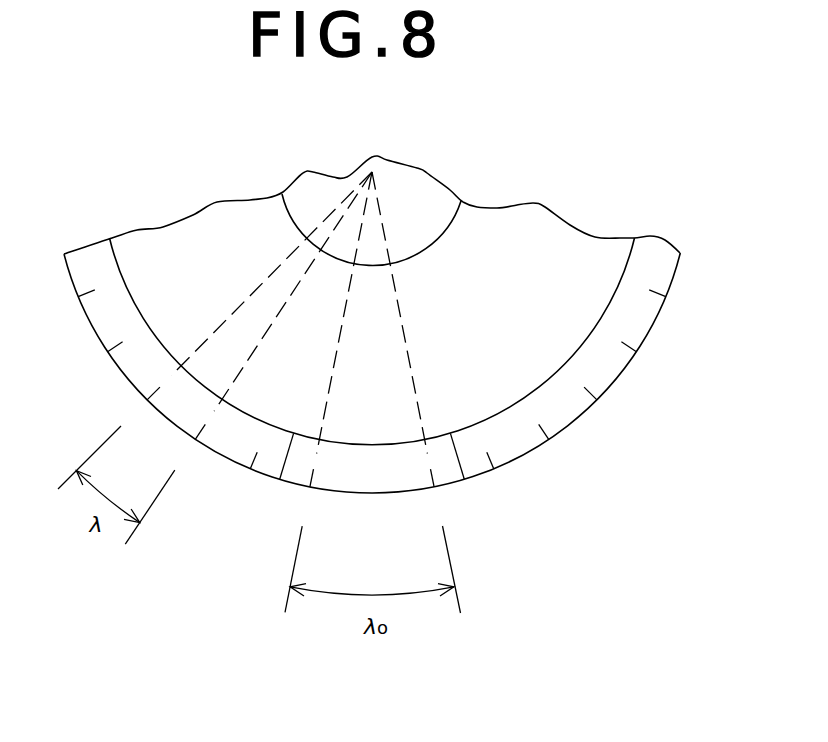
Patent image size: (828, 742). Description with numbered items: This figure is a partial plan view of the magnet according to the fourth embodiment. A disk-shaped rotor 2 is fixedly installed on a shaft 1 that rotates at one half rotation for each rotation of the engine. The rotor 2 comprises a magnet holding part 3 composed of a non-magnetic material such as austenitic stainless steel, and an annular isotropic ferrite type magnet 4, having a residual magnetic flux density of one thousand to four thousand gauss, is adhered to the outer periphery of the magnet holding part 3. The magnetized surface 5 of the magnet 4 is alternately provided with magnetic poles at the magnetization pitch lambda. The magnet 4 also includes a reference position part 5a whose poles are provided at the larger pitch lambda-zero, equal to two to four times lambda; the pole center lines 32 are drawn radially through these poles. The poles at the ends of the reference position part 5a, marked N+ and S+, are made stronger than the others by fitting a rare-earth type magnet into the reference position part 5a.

The shaft 1 is at (425, 173).
The rotor 2 is at (231, 214).
The magnet holding part 3 is at (545, 207).
The magnet 4 is at (658, 245).
The magnetized surface 5 is at (657, 320).
The reference position part 5a is at (370, 497).
The pole center lines 32 is at (375, 455).